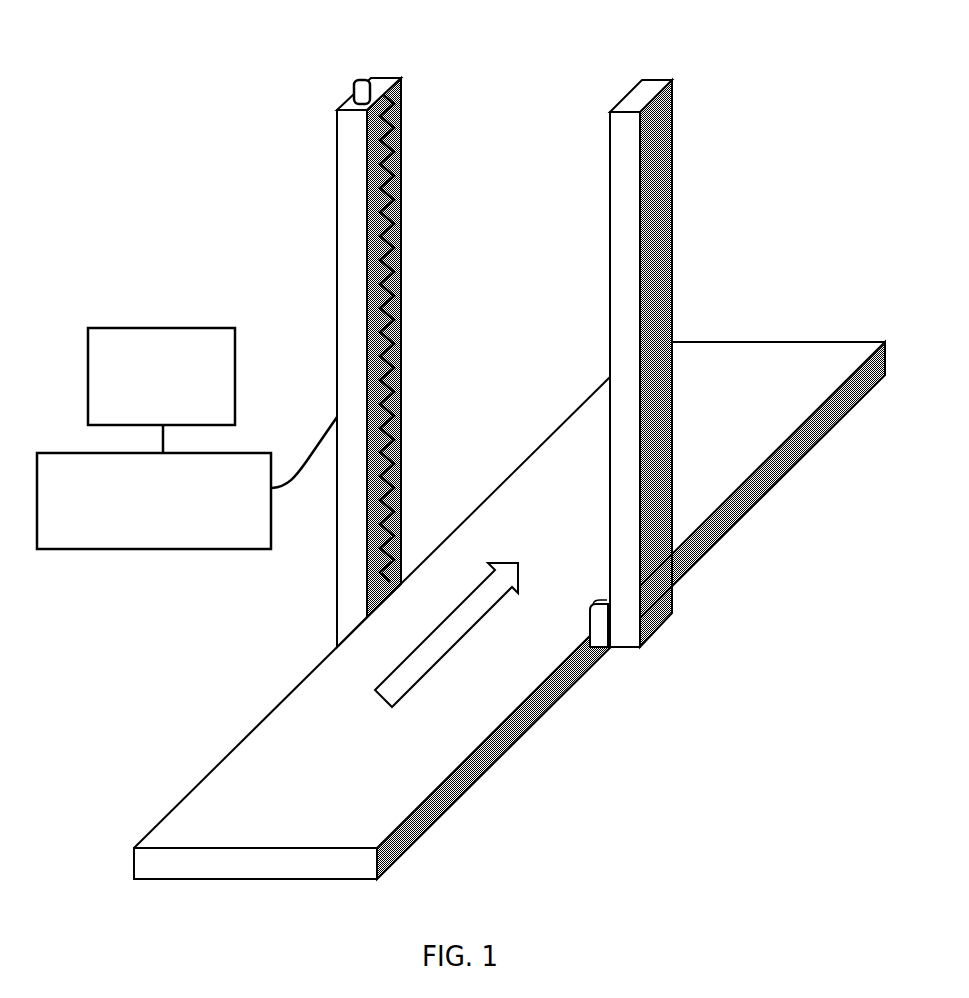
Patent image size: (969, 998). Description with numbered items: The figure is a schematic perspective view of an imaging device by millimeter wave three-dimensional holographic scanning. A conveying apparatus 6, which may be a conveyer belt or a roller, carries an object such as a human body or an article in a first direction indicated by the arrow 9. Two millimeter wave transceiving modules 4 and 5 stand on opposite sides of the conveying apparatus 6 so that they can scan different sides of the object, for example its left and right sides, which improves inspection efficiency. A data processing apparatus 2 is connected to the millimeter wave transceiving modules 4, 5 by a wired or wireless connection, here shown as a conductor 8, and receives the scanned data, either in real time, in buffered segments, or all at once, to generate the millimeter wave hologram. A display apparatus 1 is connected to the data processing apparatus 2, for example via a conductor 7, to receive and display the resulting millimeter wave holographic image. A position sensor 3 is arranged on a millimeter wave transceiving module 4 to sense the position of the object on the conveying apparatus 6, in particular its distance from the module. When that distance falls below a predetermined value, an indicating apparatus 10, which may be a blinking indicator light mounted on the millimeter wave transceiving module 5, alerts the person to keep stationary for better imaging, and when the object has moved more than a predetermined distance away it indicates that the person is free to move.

The display apparatus 1 is at (161, 376).
The data processing apparatus 2 is at (154, 501).
The position sensor 3 is at (598, 627).
The millimeter wave transceiving module 4 is at (615, 178).
The millimeter wave transceiving module 5 is at (347, 190).
The conveying apparatus 6 is at (323, 740).
The conductor 7 is at (155, 450).
The conductor 8 is at (292, 482).
The arrow 9 is at (458, 625).
The indicating apparatus 10 is at (353, 85).